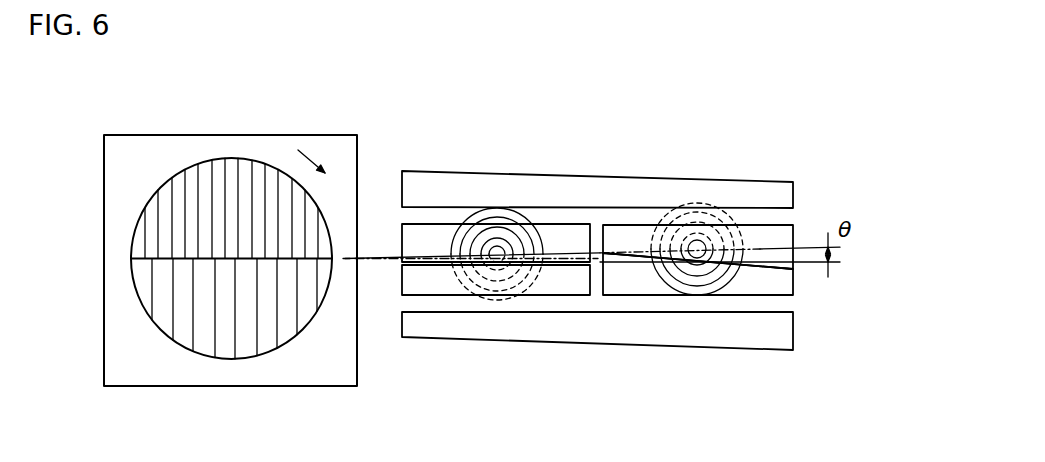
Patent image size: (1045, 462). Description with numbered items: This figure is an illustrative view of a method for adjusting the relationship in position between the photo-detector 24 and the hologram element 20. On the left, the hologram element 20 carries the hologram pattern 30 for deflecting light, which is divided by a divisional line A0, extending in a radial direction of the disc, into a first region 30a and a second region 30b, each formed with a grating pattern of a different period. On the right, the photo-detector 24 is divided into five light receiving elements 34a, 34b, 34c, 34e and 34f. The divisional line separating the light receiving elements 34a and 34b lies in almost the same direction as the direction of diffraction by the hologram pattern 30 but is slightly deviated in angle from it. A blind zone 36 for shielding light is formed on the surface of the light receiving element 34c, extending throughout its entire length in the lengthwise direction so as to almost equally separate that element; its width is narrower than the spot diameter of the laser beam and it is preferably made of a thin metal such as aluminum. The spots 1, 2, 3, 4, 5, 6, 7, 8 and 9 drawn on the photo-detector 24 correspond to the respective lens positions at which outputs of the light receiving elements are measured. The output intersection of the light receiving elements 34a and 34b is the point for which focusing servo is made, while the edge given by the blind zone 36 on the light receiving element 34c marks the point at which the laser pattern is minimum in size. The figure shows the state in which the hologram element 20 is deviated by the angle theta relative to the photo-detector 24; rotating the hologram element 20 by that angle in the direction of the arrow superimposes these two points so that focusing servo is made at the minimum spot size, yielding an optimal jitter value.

The hologram element 20 is at (318, 112).
The photo-detector 24 is at (635, 243).
The hologram pattern 30 is at (231, 269).
The first region 30a is at (218, 167).
The second region 30b is at (227, 362).
The divisional line A0 is at (168, 262).
The light receiving element 34a is at (763, 240).
The light receiving element 34b is at (768, 283).
The light receiving element 34c is at (430, 283).
The light receiving element 34e is at (780, 188).
The light receiving element 34f is at (633, 326).
The blind zone 36 is at (530, 290).
The spot 1 is at (476, 221).
The spot 2 is at (497, 227).
The spot 3 is at (508, 242).
The spot 4 is at (503, 248).
The spot 5 is at (464, 221).
The spot 6 is at (507, 266).
The spot 7 is at (508, 276).
The spot 8 is at (490, 290).
The spot 9 is at (468, 289).